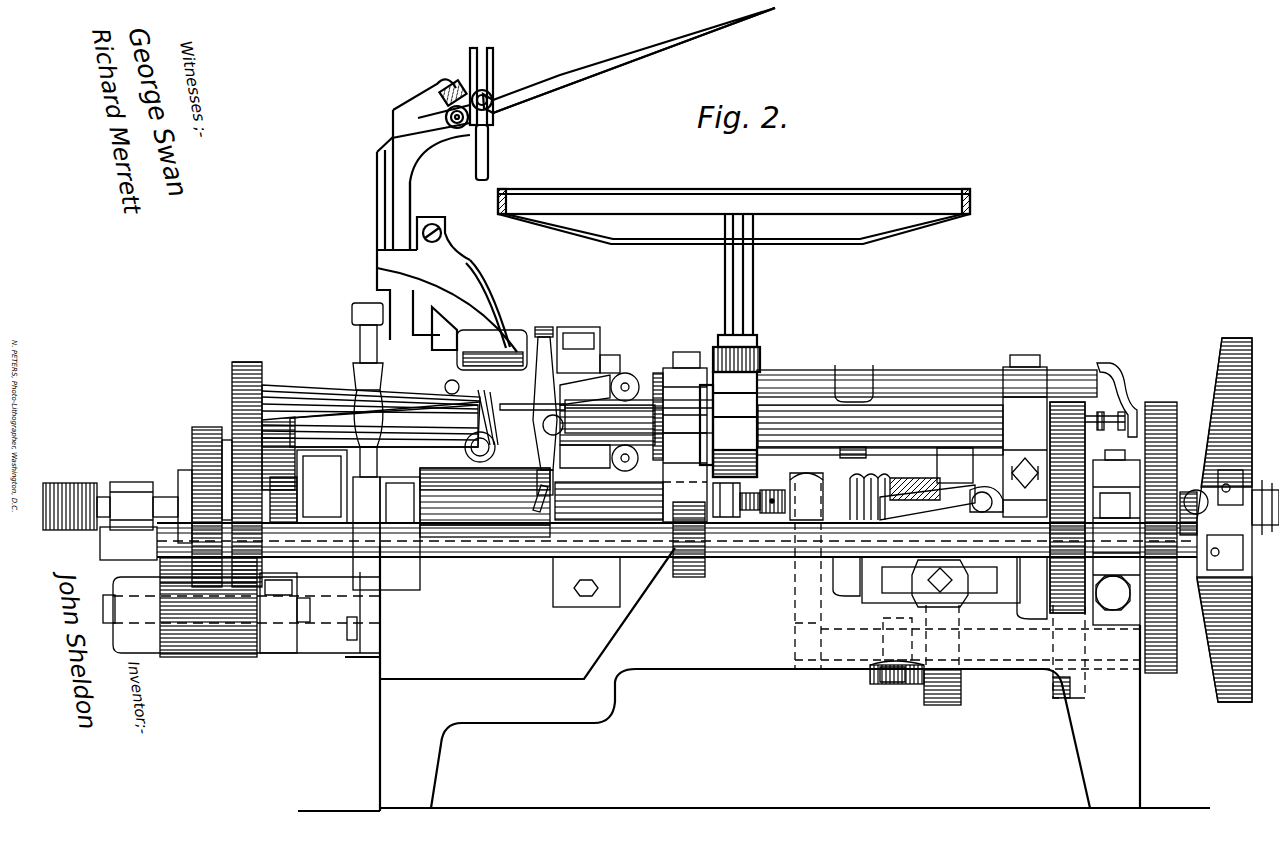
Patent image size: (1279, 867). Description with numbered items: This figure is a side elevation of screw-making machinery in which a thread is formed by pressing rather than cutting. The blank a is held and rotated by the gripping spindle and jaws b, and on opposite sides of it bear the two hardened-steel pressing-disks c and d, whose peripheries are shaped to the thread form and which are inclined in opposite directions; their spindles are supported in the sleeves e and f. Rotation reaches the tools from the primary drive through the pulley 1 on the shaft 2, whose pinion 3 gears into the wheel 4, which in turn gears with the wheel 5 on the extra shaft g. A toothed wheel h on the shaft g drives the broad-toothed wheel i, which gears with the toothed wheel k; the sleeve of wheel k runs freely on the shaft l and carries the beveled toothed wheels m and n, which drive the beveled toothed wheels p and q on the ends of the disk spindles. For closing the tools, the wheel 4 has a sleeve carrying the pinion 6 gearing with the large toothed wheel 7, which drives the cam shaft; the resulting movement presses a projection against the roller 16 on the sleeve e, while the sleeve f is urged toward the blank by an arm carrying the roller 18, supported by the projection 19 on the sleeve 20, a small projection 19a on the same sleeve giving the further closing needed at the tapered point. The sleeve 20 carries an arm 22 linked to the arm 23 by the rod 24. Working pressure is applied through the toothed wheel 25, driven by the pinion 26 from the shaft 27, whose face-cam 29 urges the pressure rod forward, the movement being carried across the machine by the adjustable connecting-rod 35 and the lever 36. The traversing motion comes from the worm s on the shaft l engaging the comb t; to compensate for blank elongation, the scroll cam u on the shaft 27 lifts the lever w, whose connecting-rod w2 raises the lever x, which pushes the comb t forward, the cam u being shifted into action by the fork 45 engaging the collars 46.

The pulley 1 is at (644, 479).
The shaft 2 is at (905, 436).
The pinion 3 is at (1067, 507).
The wheel 4 is at (1085, 445).
The wheel 5 is at (1067, 507).
The pinion 6 is at (1170, 498).
The large toothed wheel 7 is at (1170, 640).
The roller 16 is at (452, 386).
The roller 18 is at (485, 479).
The projection 19 is at (400, 533).
The small projection 19a is at (445, 545).
The sleeve 20 is at (485, 496).
The arm 22 is at (529, 498).
The arm 23 is at (545, 323).
The rod 24 is at (545, 416).
The toothed wheel 25 is at (793, 460).
The pinion 26 is at (795, 641).
The shaft 27 is at (1050, 695).
The face-cam 29 is at (772, 483).
The adjustable connecting-rod 35 is at (356, 376).
The lever 36 is at (322, 486).
The fork 45 is at (898, 684).
The collars 46 is at (876, 680).
The blank a is at (606, 416).
The gripping spindle and jaws b is at (603, 423).
The pressing-disk c is at (490, 400).
The pressing-disk d is at (489, 447).
The sleeve e is at (371, 416).
The sleeve f is at (384, 426).
The extra shaft g is at (305, 548).
The toothed wheel h is at (648, 541).
The broad-toothed wheel i is at (208, 607).
The toothed wheel k is at (234, 432).
The shaft l is at (180, 495).
The beveled toothed wheel m is at (195, 462).
The beveled toothed wheel n is at (283, 500).
The beveled toothed wheel p is at (235, 392).
The beveled toothed wheel q is at (278, 453).
The worm s is at (852, 482).
The comb t is at (906, 473).
The scroll cam u is at (962, 686).
The lever w is at (926, 580).
The connecting-rod w2 is at (893, 522).
The lever x is at (941, 502).